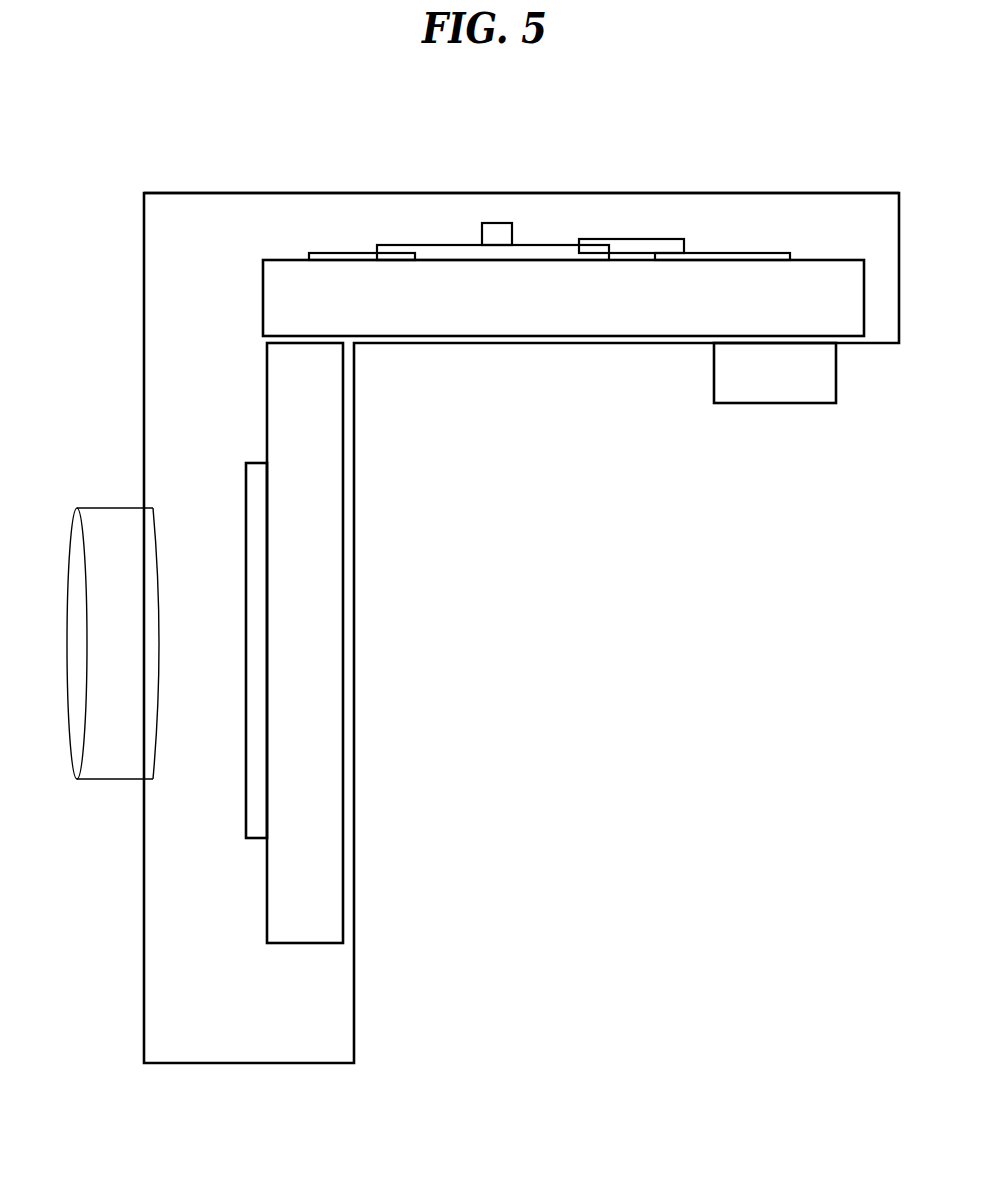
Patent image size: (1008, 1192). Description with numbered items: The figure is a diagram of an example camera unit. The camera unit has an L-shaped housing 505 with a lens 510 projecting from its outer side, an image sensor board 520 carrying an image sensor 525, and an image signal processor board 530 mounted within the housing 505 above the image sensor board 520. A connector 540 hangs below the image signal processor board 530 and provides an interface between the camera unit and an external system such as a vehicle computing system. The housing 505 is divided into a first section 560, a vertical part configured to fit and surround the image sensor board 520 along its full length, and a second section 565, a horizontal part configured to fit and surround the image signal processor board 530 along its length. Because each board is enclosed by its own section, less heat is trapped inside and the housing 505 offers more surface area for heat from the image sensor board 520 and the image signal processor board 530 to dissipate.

The housing 505 is at (460, 628).
The lens 510 is at (97, 508).
The image sensor board 520 is at (322, 943).
The image sensor 525 is at (255, 463).
The image signal processor board 530 is at (562, 336).
The connector 540 is at (775, 403).
The first section 560 is at (322, 1063).
The second section 565 is at (832, 193).